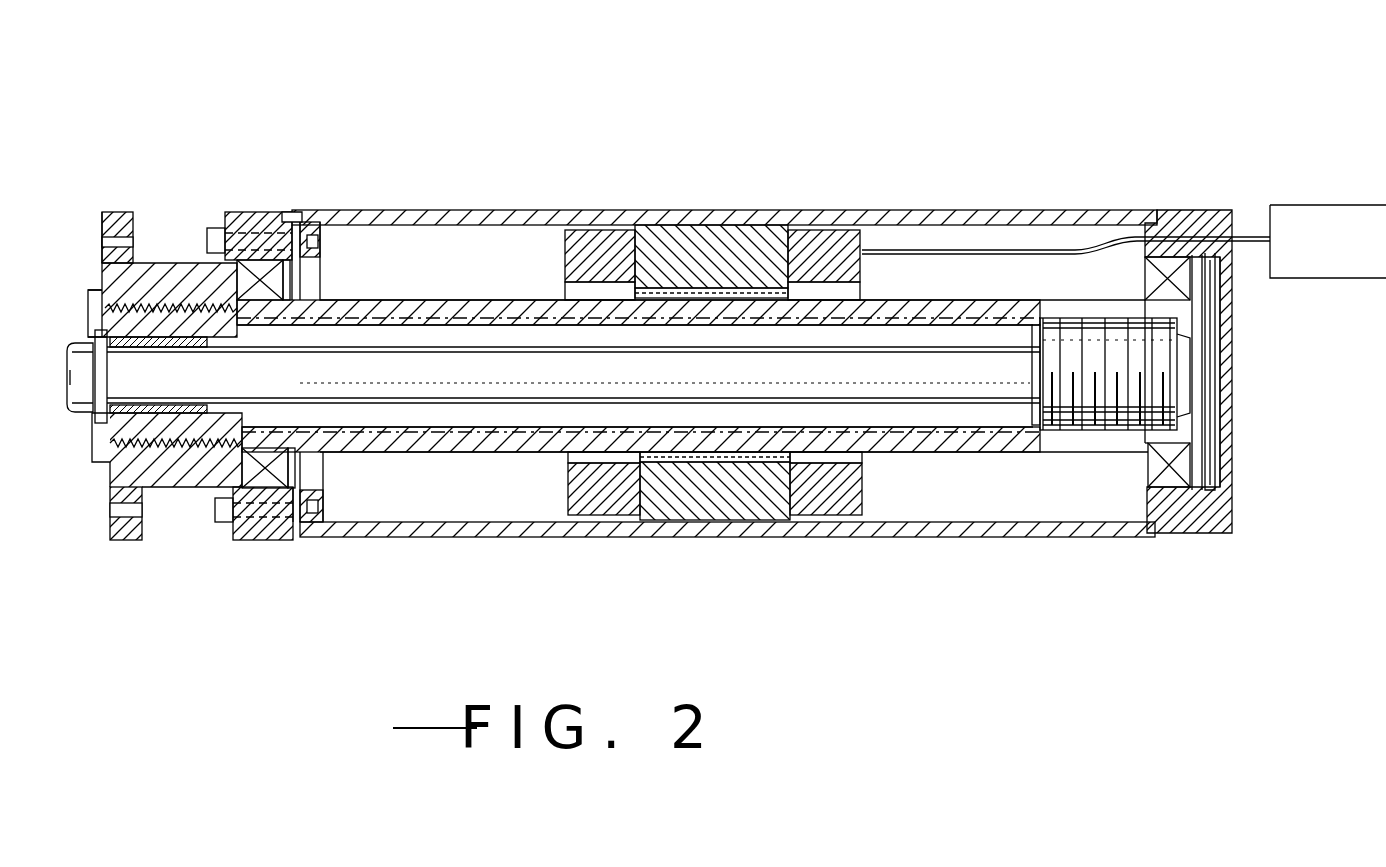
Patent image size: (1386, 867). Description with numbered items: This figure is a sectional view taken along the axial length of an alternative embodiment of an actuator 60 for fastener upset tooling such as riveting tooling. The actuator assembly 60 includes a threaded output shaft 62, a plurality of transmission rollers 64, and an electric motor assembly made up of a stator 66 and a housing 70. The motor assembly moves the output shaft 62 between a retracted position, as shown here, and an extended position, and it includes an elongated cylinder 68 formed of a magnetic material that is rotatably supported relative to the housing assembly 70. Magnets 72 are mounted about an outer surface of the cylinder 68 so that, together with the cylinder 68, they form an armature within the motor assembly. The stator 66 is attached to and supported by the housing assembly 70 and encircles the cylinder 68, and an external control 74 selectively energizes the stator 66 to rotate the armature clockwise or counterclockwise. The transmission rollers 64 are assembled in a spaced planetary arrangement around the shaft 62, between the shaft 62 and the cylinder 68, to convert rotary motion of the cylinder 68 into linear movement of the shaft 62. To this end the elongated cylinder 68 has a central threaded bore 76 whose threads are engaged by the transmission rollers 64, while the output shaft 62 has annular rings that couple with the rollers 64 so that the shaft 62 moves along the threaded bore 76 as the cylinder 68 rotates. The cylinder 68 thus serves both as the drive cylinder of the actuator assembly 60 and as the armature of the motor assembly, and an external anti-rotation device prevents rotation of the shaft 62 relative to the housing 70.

The actuator 60 is at (918, 142).
The threaded output shaft 62 is at (373, 352).
The transmission rollers 64 is at (1087, 433).
The stator 66 is at (730, 260).
The elongated cylinder 68 is at (1047, 297).
The housing 70 is at (985, 207).
The magnets 72 is at (660, 290).
The external control 74 is at (1355, 259).
The central threaded bore 76 is at (467, 312).